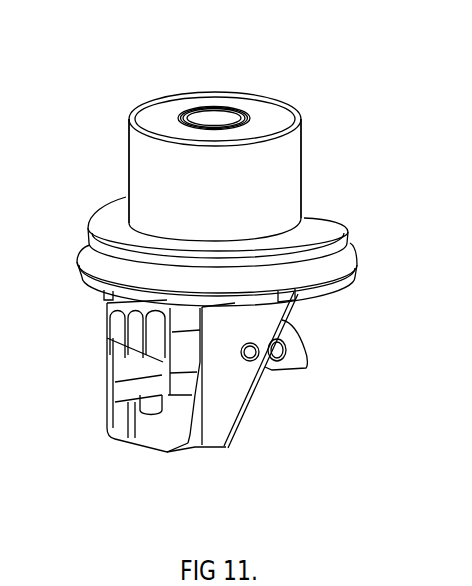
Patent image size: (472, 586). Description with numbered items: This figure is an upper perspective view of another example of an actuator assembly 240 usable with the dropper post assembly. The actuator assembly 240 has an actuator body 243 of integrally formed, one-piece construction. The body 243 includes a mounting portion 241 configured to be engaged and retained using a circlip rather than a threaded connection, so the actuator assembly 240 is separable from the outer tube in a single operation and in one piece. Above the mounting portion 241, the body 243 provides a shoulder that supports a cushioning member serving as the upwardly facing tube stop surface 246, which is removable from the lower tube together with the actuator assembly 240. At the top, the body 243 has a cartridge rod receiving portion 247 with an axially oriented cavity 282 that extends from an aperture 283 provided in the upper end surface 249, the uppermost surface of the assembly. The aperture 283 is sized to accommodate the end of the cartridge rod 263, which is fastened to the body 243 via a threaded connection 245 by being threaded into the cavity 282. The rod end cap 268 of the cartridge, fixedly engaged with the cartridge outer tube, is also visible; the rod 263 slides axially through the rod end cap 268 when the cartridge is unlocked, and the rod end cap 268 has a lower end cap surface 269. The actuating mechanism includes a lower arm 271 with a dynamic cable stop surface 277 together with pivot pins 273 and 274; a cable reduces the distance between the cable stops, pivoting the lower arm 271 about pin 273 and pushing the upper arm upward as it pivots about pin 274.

The actuator assembly 240 is at (352, 105).
The mounting portion 241 is at (345, 270).
The actuator body 243 is at (302, 178).
The threaded connection 245 is at (223, 115).
The tube stop surface 246 is at (310, 225).
The cartridge rod receiving portion 247 is at (177, 100).
The upper end surface 249 is at (153, 117).
The lower arm 271 is at (310, 370).
The pivot pin 273 is at (253, 355).
The pivot pin 274 is at (280, 345).
The dynamic cable stop surface 277 is at (170, 330).
The cavity 282 is at (233, 110).
The aperture 283 is at (180, 122).
The cartridge rod 263 is at (138, 585).
The rod end cap 268 is at (333, 585).
The lower end cap surface 269 is at (50, 582).